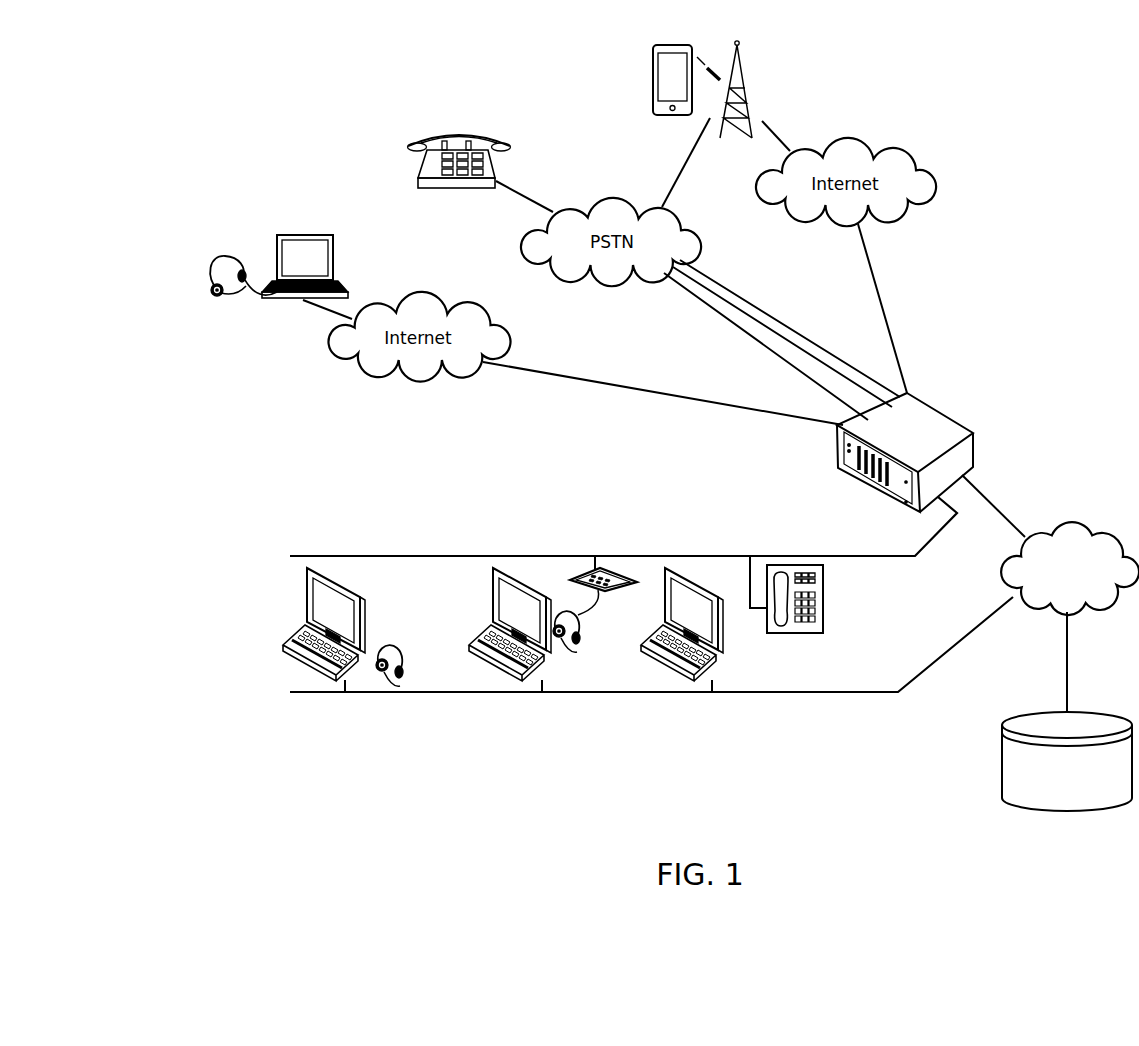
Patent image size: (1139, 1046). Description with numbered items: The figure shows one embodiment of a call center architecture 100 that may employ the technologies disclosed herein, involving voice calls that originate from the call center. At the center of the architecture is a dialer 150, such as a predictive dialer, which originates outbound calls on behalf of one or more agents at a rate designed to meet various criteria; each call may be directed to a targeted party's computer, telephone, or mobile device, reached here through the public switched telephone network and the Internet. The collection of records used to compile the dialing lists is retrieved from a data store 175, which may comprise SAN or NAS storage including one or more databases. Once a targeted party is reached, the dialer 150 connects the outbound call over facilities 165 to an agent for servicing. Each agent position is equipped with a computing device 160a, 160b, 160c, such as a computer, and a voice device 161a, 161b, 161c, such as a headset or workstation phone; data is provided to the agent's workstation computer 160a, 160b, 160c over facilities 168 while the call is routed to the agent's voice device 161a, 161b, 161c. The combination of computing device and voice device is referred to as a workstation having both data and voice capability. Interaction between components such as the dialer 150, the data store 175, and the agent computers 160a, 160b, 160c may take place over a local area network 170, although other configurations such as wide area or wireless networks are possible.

The call center architecture 100 is at (1067, 182).
The dialer 150 is at (896, 447).
The agent workstation computer 160a is at (365, 617).
The agent workstation computer 160b is at (552, 605).
The agent workstation computer 160c is at (723, 620).
The voice device 161a is at (407, 662).
The voice device 161b is at (583, 627).
The voice device 161c is at (805, 635).
The facilities 165 is at (858, 553).
The facilities 168 is at (867, 693).
The local area network 170 is at (1010, 588).
The data store 175 is at (1054, 793).